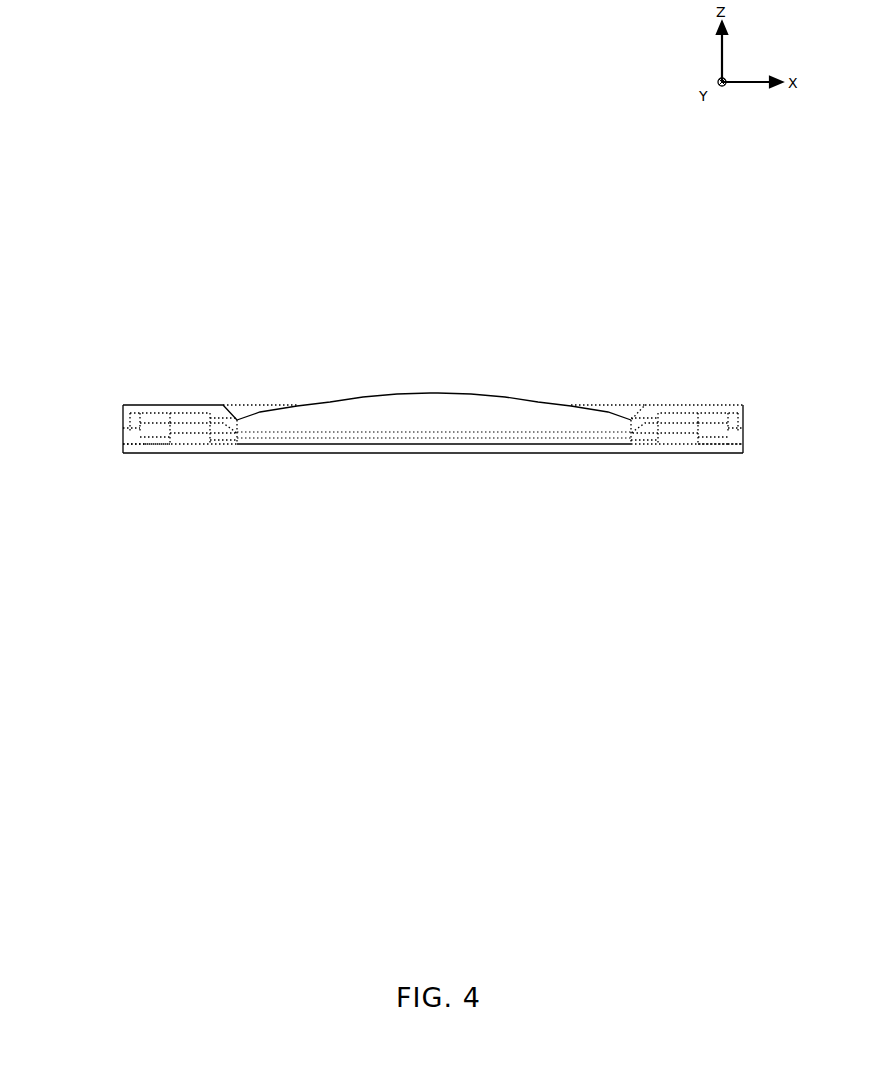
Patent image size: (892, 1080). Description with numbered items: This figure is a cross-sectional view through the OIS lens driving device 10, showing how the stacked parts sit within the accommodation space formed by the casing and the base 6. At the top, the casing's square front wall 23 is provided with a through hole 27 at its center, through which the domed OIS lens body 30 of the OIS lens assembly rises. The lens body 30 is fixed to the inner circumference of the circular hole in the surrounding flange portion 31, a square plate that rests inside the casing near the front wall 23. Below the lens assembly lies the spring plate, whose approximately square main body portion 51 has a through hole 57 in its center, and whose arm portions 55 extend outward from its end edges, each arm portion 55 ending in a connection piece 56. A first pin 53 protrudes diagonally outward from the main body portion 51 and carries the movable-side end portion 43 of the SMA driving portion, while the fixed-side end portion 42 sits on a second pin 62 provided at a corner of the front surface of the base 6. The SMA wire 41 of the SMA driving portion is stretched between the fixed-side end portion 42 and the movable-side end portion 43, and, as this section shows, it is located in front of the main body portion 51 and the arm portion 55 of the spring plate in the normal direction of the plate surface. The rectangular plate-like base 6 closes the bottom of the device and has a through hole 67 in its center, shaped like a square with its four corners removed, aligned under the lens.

The OIS lens driving device 10 is at (566, 316).
The OIS lens body 30 is at (448, 392).
The flange portion 31 is at (165, 430).
The front wall 23 is at (182, 408).
The through hole 27 is at (247, 410).
The SMA wire 41 is at (168, 432).
The fixed-side end portion 42 is at (700, 434).
The movable-side end portion 43 is at (168, 434).
The main body portion 51 is at (207, 446).
The first pin 53 is at (712, 446).
The arm portion 55 is at (152, 446).
The connection piece 56 is at (140, 446).
The through hole 57 is at (448, 444).
The base 6 is at (173, 455).
The second pin 62 is at (729, 446).
The through hole 67 is at (350, 453).